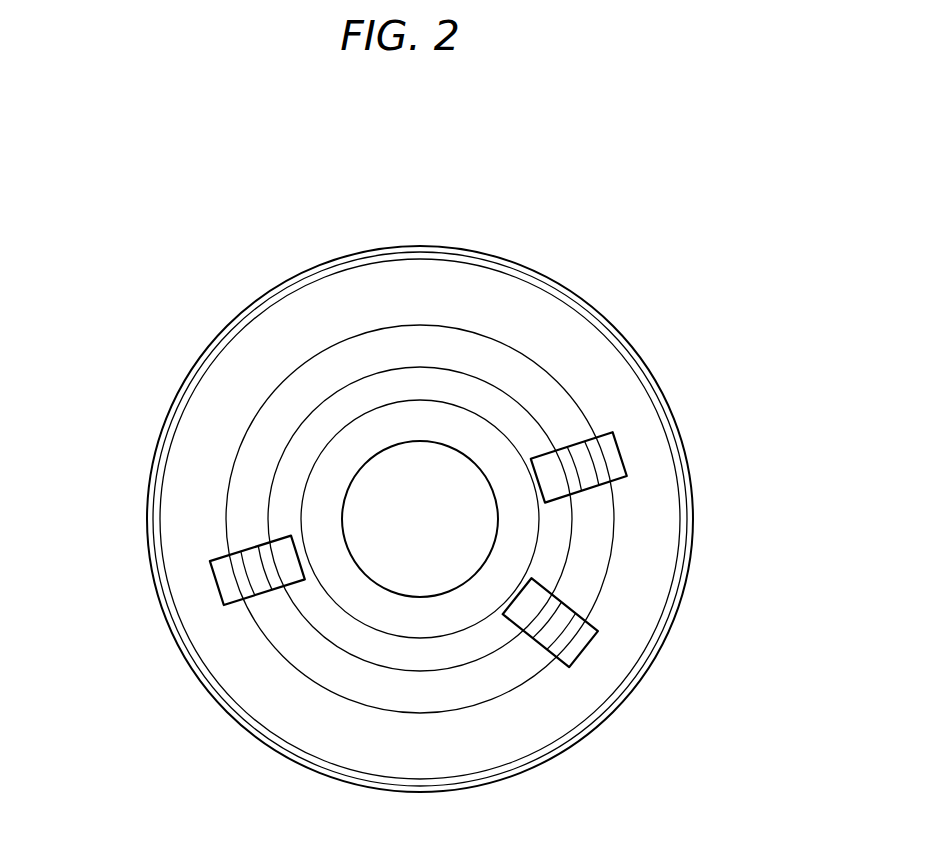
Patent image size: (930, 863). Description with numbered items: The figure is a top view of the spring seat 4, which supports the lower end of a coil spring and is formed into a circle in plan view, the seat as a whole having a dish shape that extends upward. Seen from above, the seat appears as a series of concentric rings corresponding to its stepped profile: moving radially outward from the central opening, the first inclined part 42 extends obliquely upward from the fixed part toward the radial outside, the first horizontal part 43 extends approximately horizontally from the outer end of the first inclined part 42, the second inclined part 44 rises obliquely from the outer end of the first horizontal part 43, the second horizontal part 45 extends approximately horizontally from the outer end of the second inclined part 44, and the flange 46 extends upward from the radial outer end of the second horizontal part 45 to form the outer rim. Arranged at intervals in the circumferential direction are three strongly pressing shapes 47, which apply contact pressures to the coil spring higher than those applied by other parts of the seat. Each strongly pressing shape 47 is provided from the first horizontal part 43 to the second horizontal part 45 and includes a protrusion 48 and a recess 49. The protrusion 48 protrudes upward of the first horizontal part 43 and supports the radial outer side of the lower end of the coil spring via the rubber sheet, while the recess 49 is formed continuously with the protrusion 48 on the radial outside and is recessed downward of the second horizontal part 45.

The spring seat 4 is at (599, 218).
The first inclined part 42 is at (395, 410).
The first horizontal part 43 is at (341, 400).
The second inclined part 44 is at (277, 403).
The second horizontal part 45 is at (213, 385).
The flange 46 is at (167, 437).
The strongly pressing shape 47 is at (643, 428).
The protrusion 48 is at (565, 445).
The recess 49 is at (610, 472).